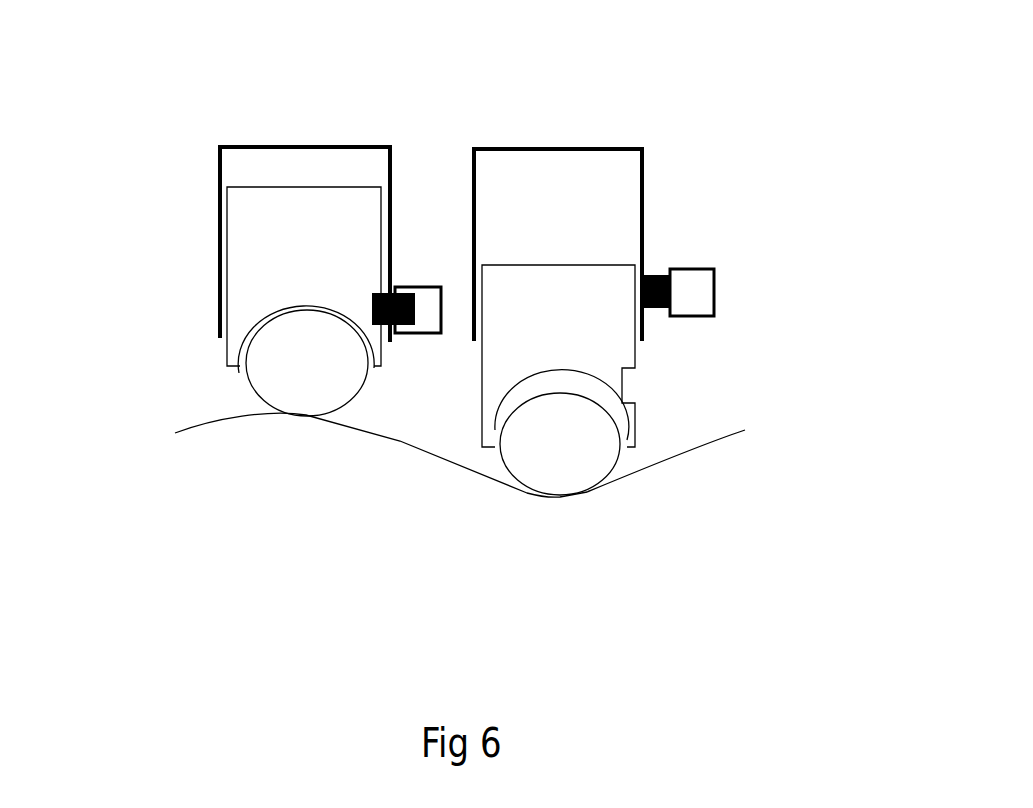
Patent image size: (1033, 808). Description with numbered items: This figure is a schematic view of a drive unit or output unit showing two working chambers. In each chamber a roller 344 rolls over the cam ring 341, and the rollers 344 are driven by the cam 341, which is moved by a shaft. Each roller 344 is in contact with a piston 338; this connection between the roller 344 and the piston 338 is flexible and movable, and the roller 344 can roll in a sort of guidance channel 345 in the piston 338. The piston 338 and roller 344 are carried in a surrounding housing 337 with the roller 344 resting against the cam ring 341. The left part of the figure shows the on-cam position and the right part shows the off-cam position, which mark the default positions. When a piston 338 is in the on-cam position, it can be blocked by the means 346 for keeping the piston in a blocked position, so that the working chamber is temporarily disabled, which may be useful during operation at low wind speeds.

The bracket 337 is at (293, 163).
The piston 338 is at (277, 240).
The cam ring 341 is at (407, 442).
The roller 344 is at (296, 372).
The guidance channel 345 is at (242, 360).
The means for keeping the piston in a blocked position 346 is at (433, 285).